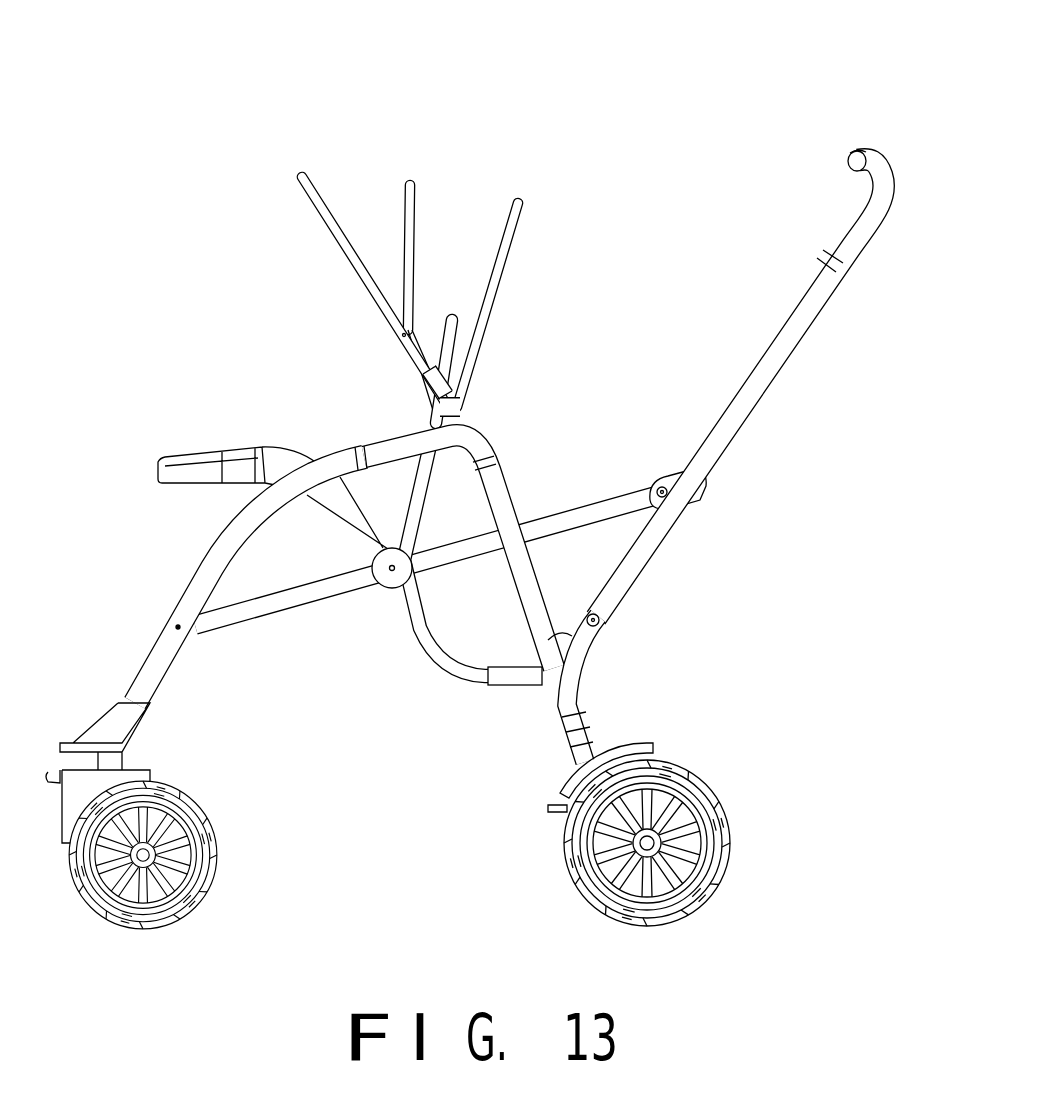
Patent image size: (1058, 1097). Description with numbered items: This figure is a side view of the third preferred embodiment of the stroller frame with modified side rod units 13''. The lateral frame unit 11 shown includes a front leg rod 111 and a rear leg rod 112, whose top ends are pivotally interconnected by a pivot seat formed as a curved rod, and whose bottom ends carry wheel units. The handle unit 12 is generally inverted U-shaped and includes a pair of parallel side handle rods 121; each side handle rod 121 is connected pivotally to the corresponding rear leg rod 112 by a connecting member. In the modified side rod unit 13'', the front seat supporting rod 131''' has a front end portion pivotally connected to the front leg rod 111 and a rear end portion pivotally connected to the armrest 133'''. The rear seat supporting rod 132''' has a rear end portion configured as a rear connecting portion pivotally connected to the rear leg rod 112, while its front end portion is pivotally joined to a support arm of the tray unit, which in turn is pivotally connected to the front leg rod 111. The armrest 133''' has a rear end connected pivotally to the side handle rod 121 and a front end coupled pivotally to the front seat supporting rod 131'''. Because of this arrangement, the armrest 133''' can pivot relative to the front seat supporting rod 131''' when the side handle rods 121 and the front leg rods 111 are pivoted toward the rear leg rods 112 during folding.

The lateral frame unit 11 is at (186, 583).
The front leg rod 111 is at (165, 660).
The rear leg rod 112 is at (491, 506).
The handle unit 12 is at (894, 150).
The side handle rod 121 is at (719, 445).
The side rod unit 13'' is at (761, 315).
The front seat supporting rod 131''' is at (425, 608).
The rear seat supporting rod 132''' is at (457, 615).
The armrest 133''' is at (645, 444).